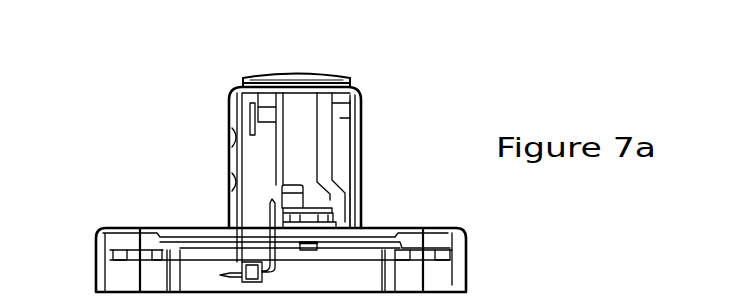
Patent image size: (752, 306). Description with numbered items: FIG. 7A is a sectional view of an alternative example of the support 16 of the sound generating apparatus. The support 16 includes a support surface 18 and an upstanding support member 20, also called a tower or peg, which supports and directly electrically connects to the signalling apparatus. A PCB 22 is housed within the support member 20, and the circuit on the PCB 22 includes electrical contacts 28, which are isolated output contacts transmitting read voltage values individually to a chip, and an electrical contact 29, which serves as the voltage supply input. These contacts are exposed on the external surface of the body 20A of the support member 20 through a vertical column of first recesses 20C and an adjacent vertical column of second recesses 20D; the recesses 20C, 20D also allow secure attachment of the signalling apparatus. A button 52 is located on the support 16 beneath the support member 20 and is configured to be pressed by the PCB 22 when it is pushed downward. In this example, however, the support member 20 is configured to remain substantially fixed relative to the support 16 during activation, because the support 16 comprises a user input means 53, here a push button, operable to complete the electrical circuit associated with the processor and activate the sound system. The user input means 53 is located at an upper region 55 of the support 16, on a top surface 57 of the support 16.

The support 16 is at (424, 79).
The support surface 18 is at (100, 230).
The support member 20 is at (240, 97).
The body 20A is at (345, 152).
The first recesses 20C is at (222, 152).
The second recesses 20D is at (222, 177).
The PCB 22 is at (238, 142).
The electrical contact 28 is at (163, 148).
The electrical contact 29 is at (164, 185).
The button 52 is at (328, 217).
The user input means 53 is at (318, 76).
The upper region 55 is at (230, 63).
The top surface 57 is at (272, 75).